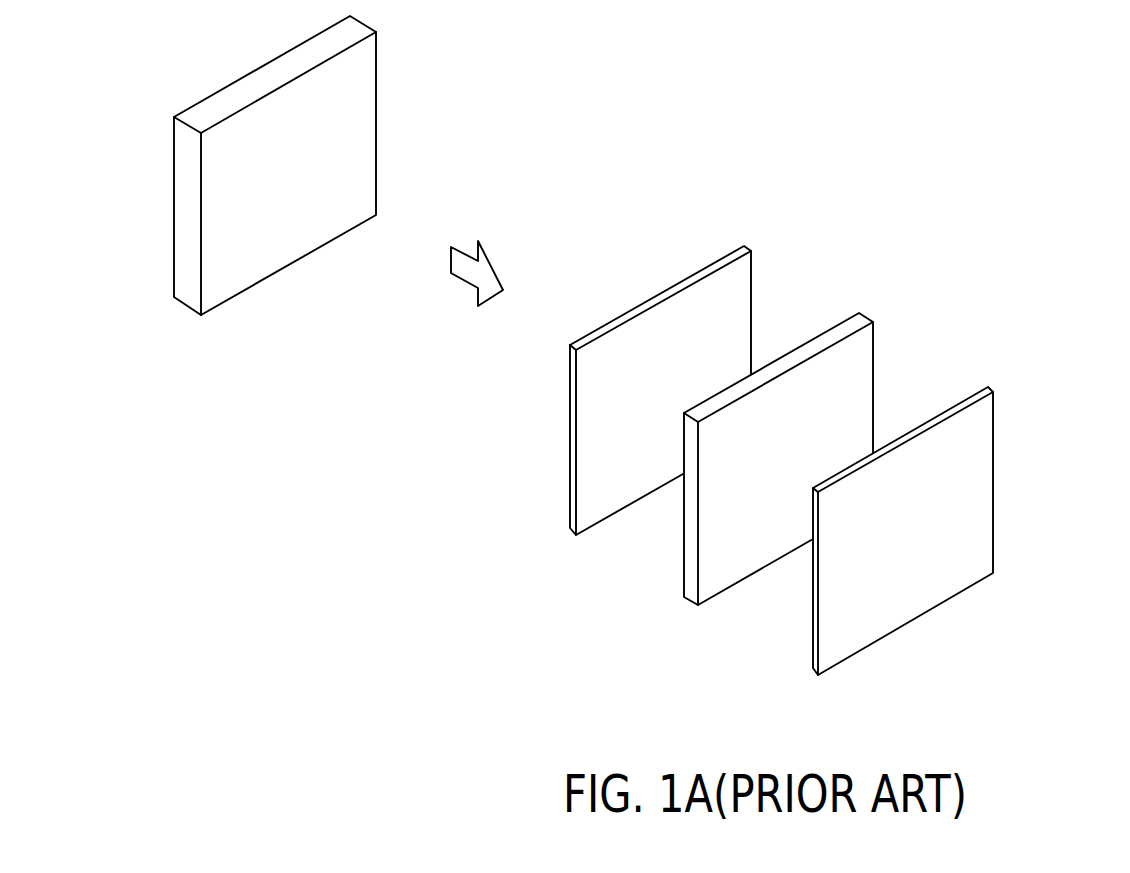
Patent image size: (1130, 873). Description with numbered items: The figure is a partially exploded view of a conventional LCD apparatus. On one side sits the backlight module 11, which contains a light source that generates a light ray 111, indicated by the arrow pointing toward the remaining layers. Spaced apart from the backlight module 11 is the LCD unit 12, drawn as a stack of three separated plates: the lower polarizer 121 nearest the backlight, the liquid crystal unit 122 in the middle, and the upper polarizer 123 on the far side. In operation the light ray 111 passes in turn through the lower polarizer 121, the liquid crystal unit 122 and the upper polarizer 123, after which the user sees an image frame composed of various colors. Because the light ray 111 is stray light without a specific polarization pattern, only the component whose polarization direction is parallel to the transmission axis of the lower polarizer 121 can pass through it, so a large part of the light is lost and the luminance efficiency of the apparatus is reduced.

The backlight module 11 is at (363, 103).
The light ray 111 is at (483, 255).
The LCD unit 12 is at (834, 424).
The lower polarizer 121 is at (746, 245).
The liquid crystal unit 122 is at (877, 310).
The upper polarizer 123 is at (949, 507).